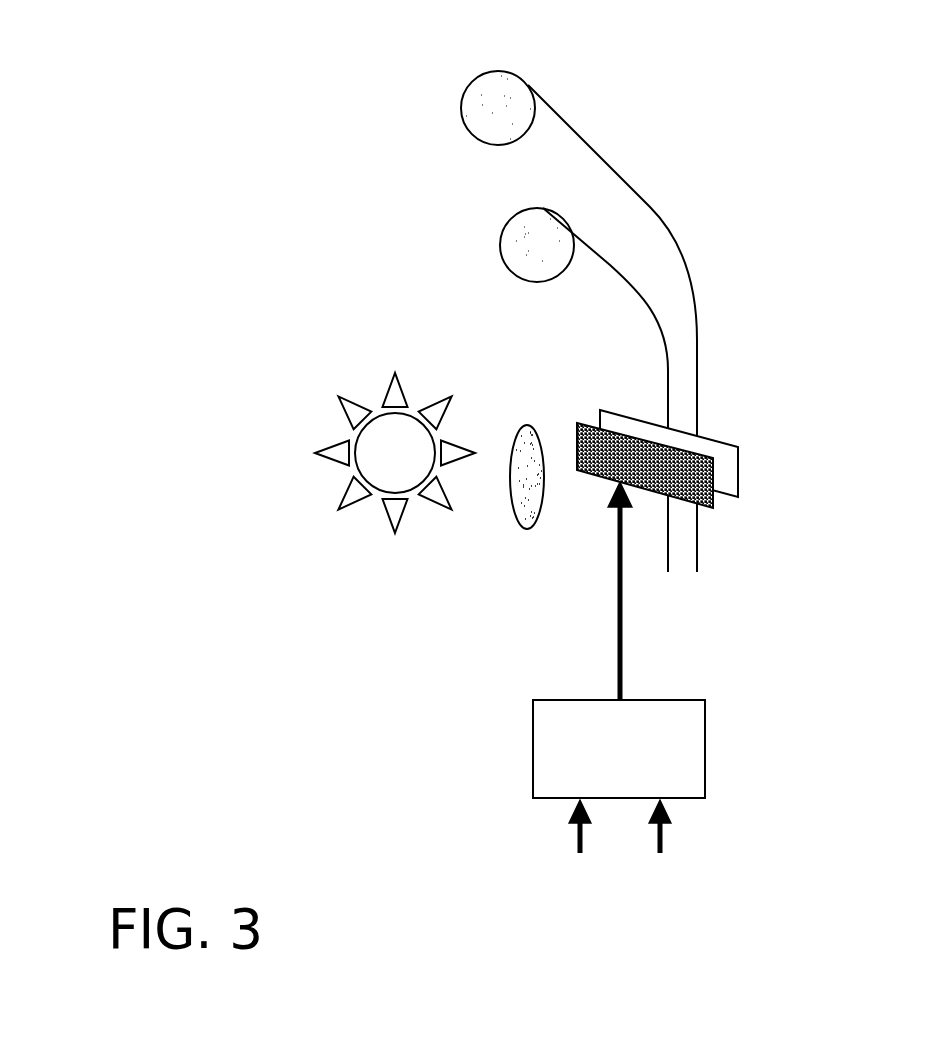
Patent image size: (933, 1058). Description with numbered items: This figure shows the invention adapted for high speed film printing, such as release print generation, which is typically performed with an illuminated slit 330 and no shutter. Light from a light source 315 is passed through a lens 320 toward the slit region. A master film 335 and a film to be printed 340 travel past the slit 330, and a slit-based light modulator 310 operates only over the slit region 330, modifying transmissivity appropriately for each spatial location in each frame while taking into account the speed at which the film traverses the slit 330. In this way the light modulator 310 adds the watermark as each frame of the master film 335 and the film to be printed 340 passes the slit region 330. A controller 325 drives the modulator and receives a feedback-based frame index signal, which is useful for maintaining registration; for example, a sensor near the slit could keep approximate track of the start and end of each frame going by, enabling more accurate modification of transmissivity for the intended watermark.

The film to be printed 340 is at (460, 93).
The master film 335 is at (507, 218).
The light source 315 is at (355, 438).
The lens 320 is at (523, 530).
The illuminated slit 330 is at (740, 443).
The slit-based light modulator 310 is at (718, 508).
The controller 325 is at (530, 757).